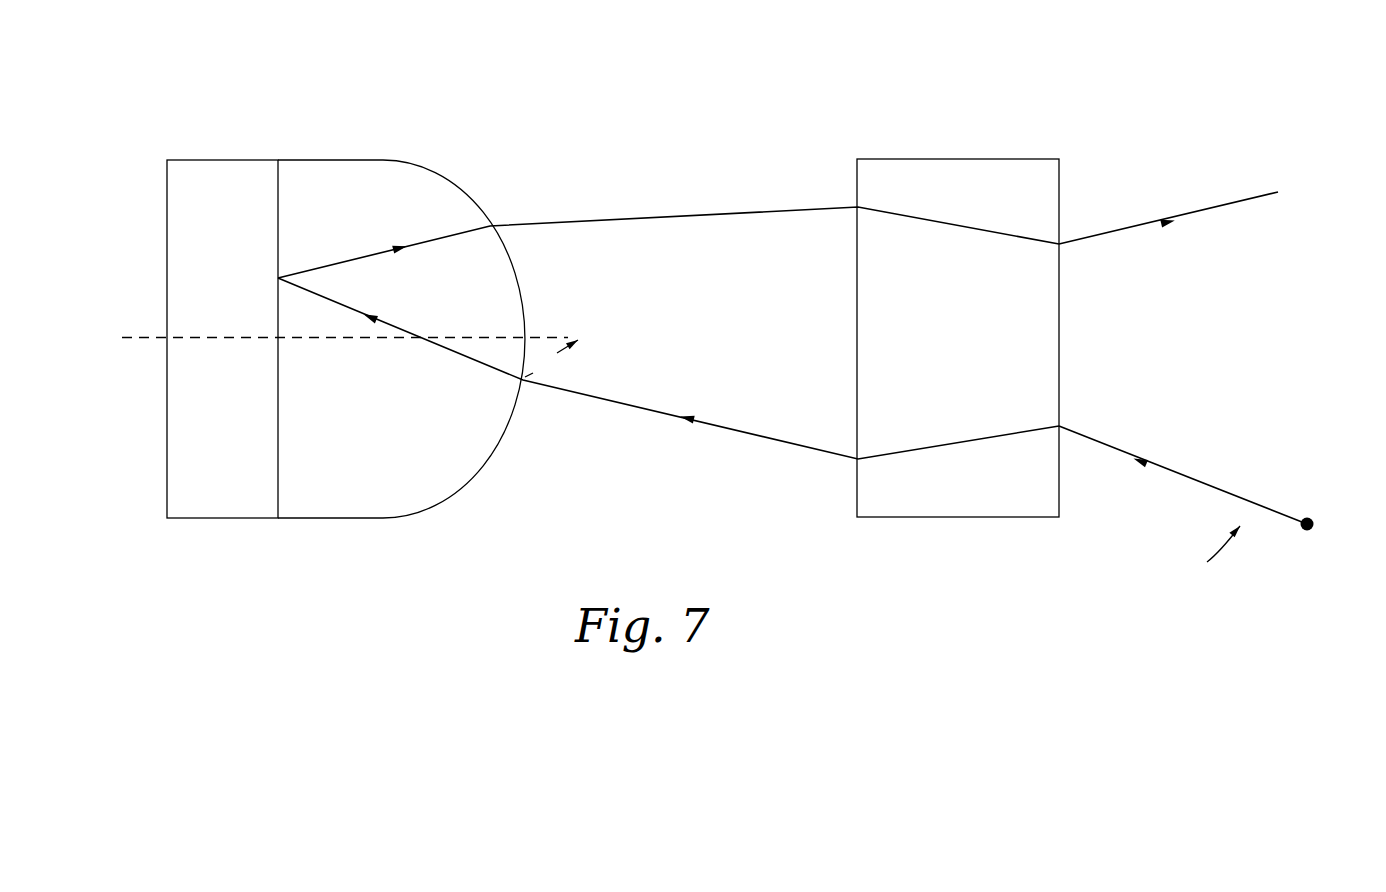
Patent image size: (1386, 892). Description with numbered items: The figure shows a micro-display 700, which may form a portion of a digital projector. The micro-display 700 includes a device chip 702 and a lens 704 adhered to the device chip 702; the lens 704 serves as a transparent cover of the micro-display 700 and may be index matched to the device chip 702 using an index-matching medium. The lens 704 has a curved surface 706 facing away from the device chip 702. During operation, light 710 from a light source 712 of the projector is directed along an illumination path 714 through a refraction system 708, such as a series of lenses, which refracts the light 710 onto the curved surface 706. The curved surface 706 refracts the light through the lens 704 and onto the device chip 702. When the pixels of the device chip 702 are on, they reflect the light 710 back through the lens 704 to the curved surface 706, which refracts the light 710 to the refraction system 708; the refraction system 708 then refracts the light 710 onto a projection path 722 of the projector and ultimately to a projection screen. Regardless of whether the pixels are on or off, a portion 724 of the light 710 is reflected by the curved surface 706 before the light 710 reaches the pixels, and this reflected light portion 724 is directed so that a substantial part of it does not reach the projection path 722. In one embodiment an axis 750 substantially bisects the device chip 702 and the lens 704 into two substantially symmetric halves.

The micro-display 700 is at (725, 322).
The device chip 702 is at (257, 430).
The lens 704 is at (407, 338).
The curved surface 706 is at (468, 197).
The refraction system 708 is at (955, 389).
The light 710 is at (1217, 489).
The light source 712 is at (1310, 530).
The illumination path 714 is at (1201, 558).
The projection path 722 is at (1203, 173).
The reflected light portion 724 is at (540, 368).
The axis 750 is at (123, 337).